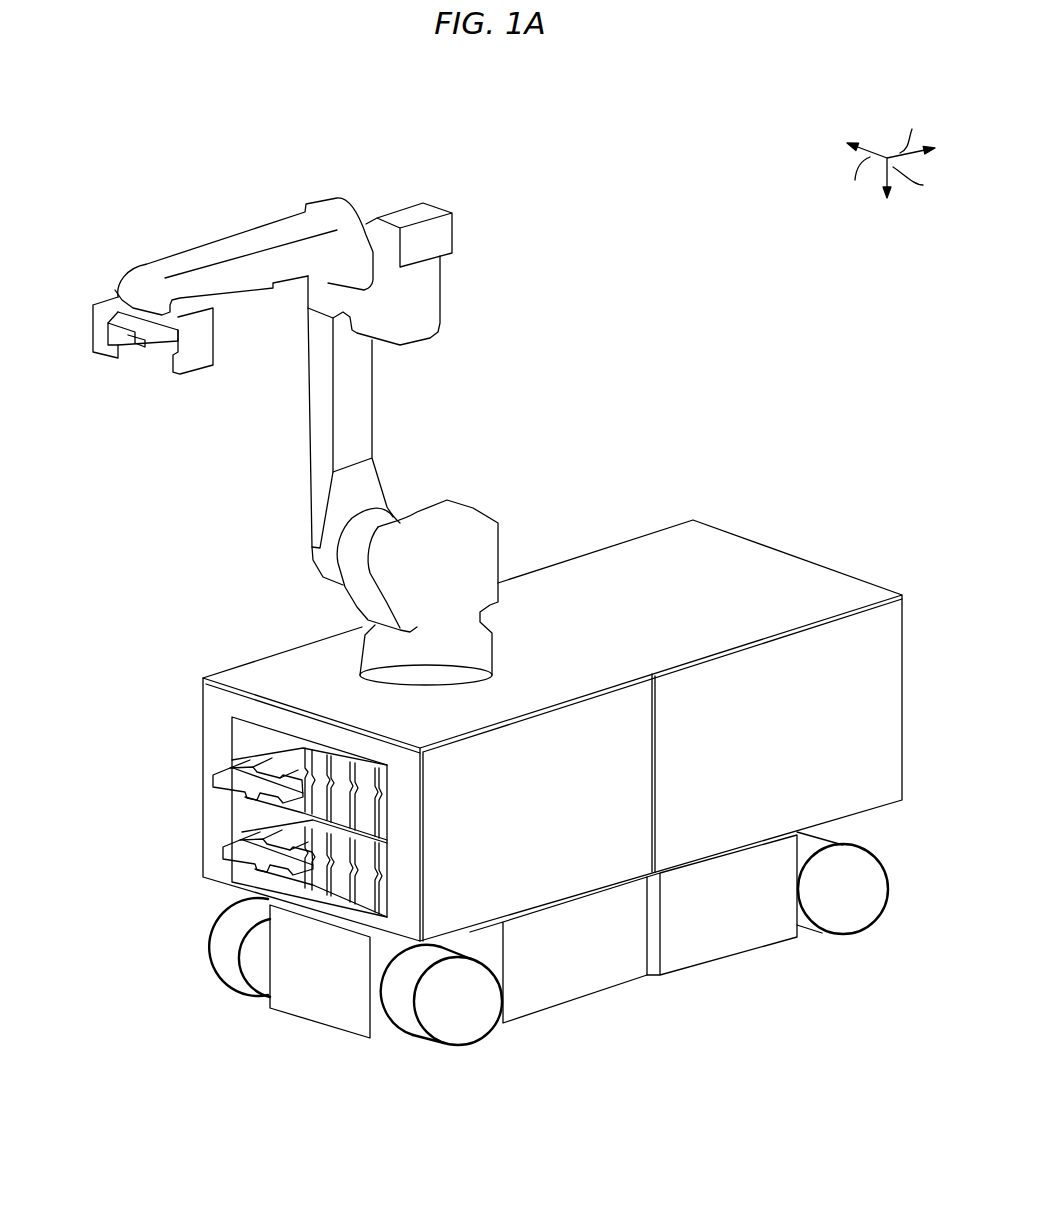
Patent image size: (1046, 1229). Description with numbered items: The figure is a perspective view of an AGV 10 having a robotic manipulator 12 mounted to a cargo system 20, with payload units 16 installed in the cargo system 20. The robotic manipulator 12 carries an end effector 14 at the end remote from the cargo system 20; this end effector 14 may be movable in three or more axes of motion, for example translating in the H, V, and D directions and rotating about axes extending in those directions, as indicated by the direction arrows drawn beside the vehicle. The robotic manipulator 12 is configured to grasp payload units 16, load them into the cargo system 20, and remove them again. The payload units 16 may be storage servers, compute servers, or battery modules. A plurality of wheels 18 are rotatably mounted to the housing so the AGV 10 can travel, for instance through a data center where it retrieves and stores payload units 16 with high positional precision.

The AGV 10 is at (114, 127).
The robotic manipulator 12 is at (310, 388).
The end effector 14 is at (168, 355).
The payload units 16 is at (598, 995).
The wheels 18 is at (468, 1052).
The cargo system 20 is at (262, 621).